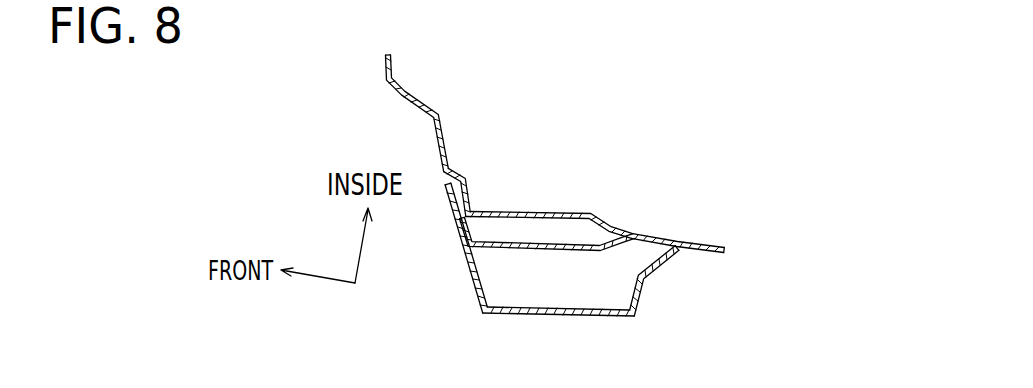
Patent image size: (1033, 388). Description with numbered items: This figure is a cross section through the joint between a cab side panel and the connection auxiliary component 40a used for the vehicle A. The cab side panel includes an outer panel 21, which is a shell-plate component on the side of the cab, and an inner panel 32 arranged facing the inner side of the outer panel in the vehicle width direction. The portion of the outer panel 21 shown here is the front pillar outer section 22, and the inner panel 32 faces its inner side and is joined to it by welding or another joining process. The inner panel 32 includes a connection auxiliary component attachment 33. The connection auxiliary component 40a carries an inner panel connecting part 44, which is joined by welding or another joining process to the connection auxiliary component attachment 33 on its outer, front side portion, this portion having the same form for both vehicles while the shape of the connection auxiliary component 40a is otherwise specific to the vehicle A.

The connection auxiliary component 40a is at (401, 84).
The inner panel connecting part 44 is at (465, 187).
The connection auxiliary component attachment 33 is at (472, 225).
The inner panel 32 is at (563, 253).
The front pillar outer section 22 is at (473, 285).
The outer panel 21 is at (642, 295).
The vehicle A is at (747, 299).